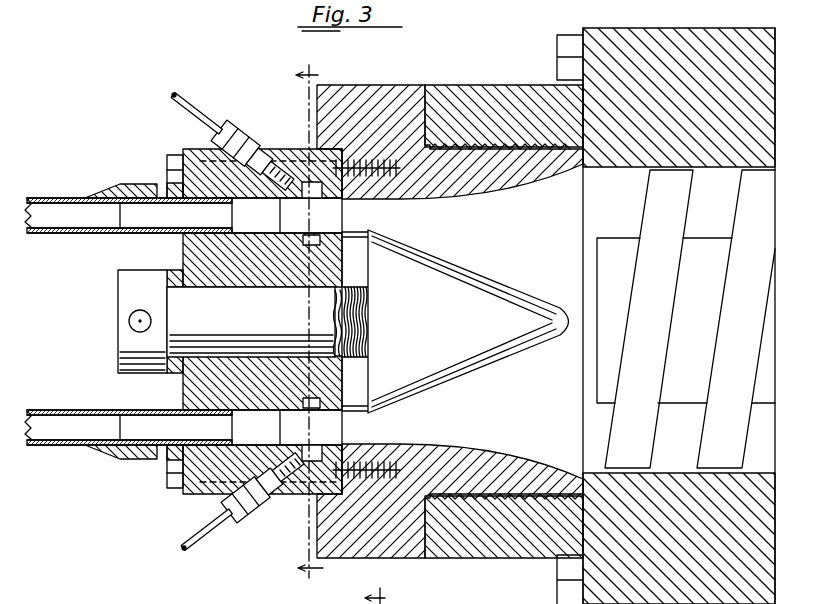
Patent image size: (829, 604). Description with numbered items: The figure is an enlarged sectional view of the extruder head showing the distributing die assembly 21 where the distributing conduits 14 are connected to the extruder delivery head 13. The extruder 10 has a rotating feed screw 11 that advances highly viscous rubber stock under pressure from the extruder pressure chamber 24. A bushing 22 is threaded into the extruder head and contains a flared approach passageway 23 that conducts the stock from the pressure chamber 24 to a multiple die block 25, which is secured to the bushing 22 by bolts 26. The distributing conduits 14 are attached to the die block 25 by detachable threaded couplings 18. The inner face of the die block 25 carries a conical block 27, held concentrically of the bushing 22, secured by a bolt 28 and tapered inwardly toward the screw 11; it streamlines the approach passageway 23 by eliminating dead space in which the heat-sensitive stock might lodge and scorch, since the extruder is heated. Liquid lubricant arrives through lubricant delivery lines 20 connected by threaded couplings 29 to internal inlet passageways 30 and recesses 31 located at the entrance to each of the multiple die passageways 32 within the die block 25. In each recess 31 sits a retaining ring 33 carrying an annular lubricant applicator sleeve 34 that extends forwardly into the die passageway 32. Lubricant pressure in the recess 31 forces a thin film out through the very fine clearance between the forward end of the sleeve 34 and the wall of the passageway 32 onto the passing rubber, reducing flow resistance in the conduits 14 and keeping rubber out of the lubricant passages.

The extruder 10 is at (664, 8).
The rotating feed screw 11 is at (712, 447).
The extruder delivery head 13 is at (508, 94).
The distributing conduits 14 is at (64, 200).
The threaded couplings 18 is at (114, 184).
The lubricant delivery lines 20 is at (205, 98).
The distributing die assembly 21 is at (299, 138).
The bushing 22 is at (395, 93).
The flared approach passageway 23 is at (486, 234).
The extruder pressure chamber 24 is at (616, 211).
The multiple die block 25 is at (198, 149).
The bolts 26 is at (165, 480).
The conical block 27 is at (471, 332).
The bolt 28 is at (264, 327).
The threaded couplings 29 is at (241, 132).
The internal inlet passageways 30 is at (302, 199).
The recesses 31 is at (306, 248).
The multiple die passageways 32 is at (256, 229).
The retaining ring 33 is at (348, 232).
The annular lubricant applicator sleeve 34 is at (302, 248).